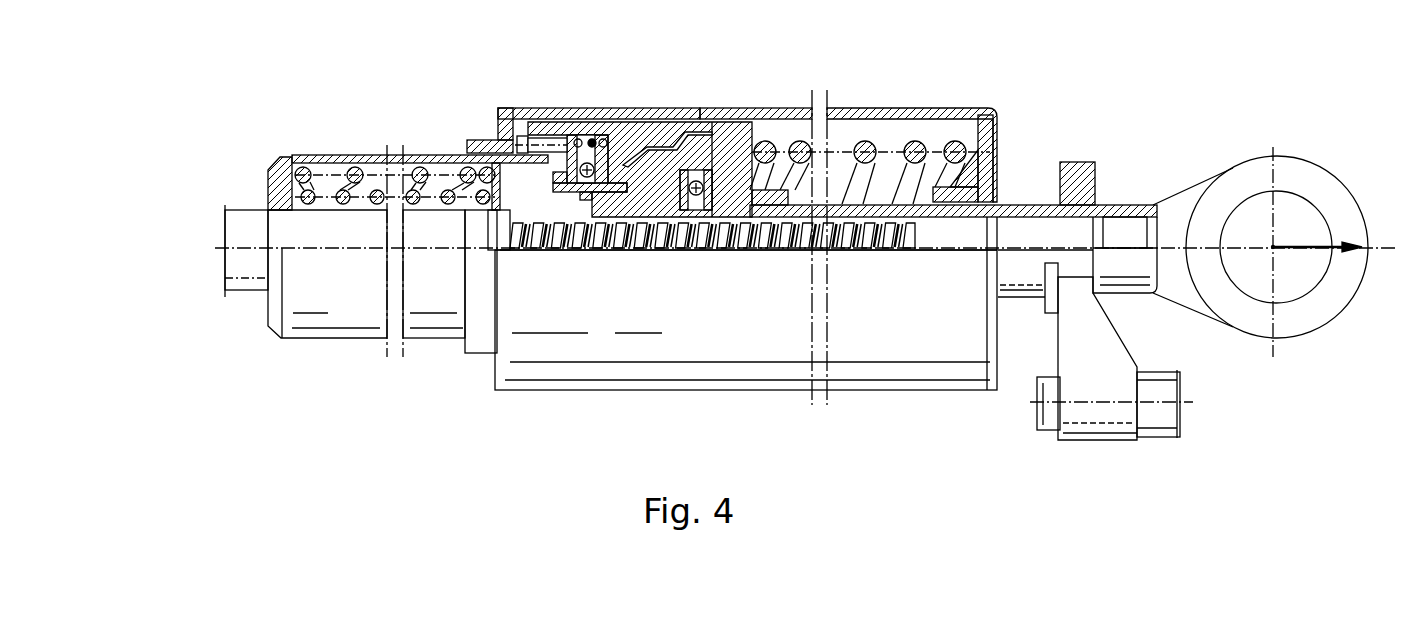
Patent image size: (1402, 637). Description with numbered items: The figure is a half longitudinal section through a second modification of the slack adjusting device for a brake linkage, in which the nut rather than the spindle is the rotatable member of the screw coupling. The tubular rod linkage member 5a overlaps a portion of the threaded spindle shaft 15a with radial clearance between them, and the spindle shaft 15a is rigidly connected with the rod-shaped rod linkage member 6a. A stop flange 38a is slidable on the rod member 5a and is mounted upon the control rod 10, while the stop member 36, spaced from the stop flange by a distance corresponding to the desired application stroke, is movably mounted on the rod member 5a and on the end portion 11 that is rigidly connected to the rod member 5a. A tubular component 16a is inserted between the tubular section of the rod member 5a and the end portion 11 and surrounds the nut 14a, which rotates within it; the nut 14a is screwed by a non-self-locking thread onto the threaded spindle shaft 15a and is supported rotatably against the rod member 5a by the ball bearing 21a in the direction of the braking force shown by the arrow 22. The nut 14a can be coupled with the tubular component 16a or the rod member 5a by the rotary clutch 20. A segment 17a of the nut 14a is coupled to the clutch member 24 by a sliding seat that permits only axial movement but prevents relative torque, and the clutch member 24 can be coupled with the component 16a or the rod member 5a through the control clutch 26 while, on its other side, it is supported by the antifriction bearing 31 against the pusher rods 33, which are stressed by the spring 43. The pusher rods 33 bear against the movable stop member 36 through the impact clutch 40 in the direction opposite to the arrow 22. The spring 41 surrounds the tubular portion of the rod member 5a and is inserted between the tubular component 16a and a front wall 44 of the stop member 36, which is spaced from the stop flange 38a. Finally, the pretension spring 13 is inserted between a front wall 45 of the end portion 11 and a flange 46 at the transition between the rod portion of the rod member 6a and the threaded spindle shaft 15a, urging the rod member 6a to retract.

The tubular rod linkage member 5a is at (1018, 212).
The rod-shaped rod linkage member 6a is at (238, 272).
The control rod 10 is at (1157, 413).
The end portion 11 is at (343, 160).
The pretensioned spring 13 is at (448, 193).
The nut 14a is at (657, 202).
The threaded spindle shaft 15a is at (845, 240).
The tubular component 16a is at (643, 140).
The segment of nut 17a is at (607, 215).
The rotary clutch 20 is at (677, 130).
The ball bearing 21a is at (737, 113).
The arrow 22 is at (1310, 245).
The clutch member 24 is at (623, 158).
The control clutch 26 is at (642, 157).
The antifriction bearing 31 is at (580, 195).
The pusher rods 33 is at (528, 138).
The stop member 36 is at (862, 115).
The stop flange 38a is at (1080, 183).
The impact clutch 40 is at (497, 118).
The spring 41 is at (915, 147).
The spring 43 is at (590, 145).
The front wall 44 is at (987, 148).
The front wall 45 is at (283, 195).
The flange 46 is at (502, 222).